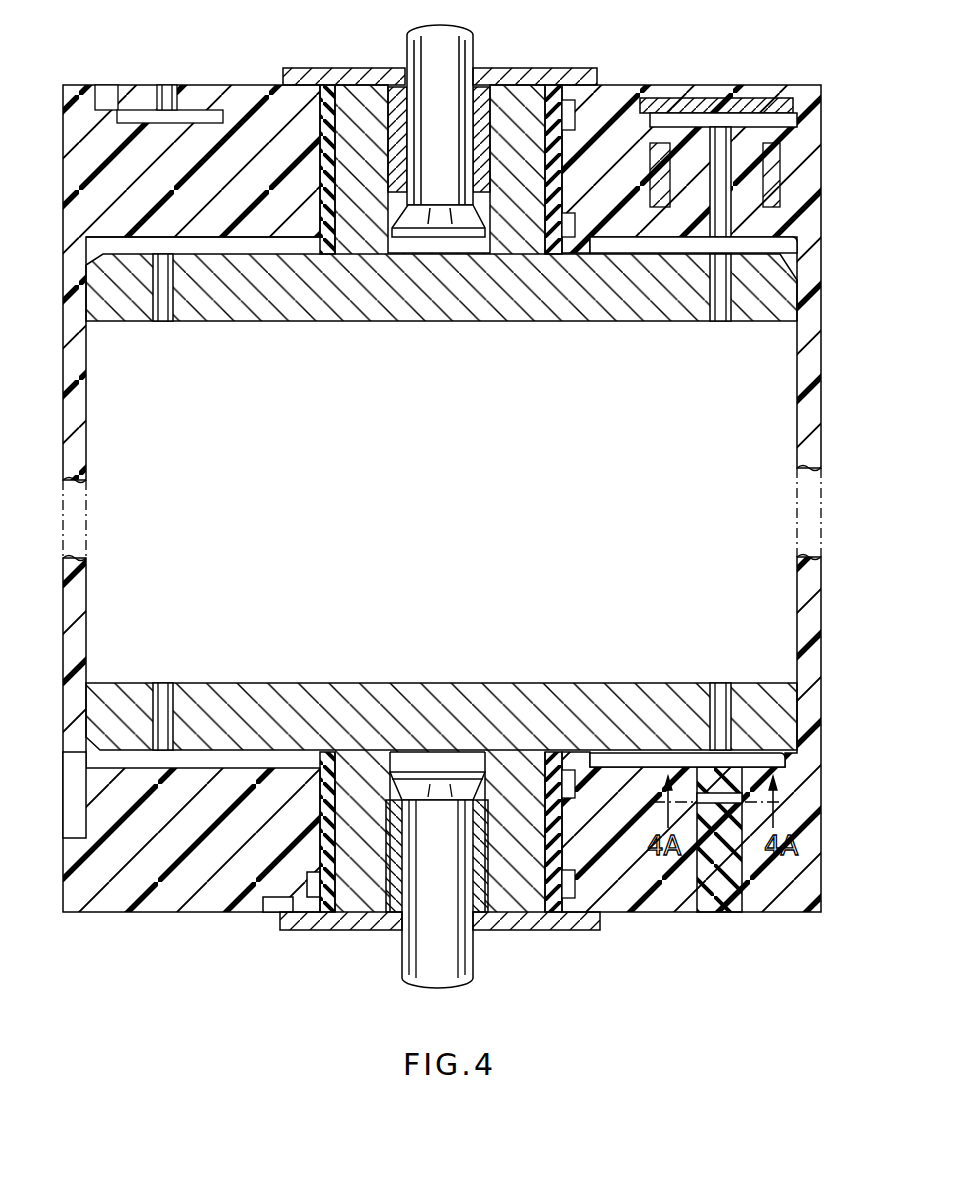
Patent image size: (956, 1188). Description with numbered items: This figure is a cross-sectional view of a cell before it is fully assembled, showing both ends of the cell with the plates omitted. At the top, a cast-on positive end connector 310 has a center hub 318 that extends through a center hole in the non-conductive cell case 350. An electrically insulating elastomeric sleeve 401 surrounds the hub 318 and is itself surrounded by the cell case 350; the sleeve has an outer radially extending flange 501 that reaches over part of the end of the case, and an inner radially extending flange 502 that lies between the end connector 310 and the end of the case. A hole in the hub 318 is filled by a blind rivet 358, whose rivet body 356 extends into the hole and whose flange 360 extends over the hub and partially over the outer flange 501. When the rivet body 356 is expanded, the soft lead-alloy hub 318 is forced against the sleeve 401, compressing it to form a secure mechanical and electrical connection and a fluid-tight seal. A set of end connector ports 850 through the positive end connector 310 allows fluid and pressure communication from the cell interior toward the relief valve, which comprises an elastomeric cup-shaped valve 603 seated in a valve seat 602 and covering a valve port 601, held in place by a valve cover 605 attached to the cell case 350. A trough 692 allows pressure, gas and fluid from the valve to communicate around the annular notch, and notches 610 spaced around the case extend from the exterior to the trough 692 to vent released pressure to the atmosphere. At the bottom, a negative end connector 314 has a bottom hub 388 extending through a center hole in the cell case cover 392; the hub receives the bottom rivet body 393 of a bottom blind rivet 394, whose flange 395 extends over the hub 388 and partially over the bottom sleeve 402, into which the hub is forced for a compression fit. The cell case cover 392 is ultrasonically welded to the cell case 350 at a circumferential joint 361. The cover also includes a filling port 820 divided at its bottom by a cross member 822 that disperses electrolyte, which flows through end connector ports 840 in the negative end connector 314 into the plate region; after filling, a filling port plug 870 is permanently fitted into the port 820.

The trough 692 is at (147, 120).
The outer radially extending flange 501 is at (270, 82).
The electrically insulating elastomeric sleeve 401 is at (327, 100).
The rivet body 356 is at (396, 168).
The blind rivet 358 is at (500, 80).
The flange 360 is at (578, 84).
The cup-shaped valve 603 is at (694, 135).
The valve cover 605 is at (748, 84).
The notches 610 is at (808, 88).
The valve seat 602 is at (772, 140).
The valve port 601 is at (738, 218).
The cell case 350 is at (76, 270).
The inner radially extending flange 502 is at (327, 252).
The center hub 318 is at (510, 232).
The positive end connector 310 is at (590, 318).
The end connector ports 850 is at (722, 322).
The end connector ports 840 is at (723, 705).
The negative end connector 314 is at (92, 708).
The circumferential joint 361 is at (74, 838).
The cell case cover 392 is at (105, 898).
The bottom blind rivet 394 is at (345, 931).
The bottom hub 388 is at (366, 912).
The bottom rivet body 393 is at (490, 870).
The flange 395 is at (585, 931).
The bottom sleeve 402 is at (555, 835).
The filling port 820 is at (737, 912).
The filling port plug 870 is at (742, 905).
The cross member 822 is at (752, 772).